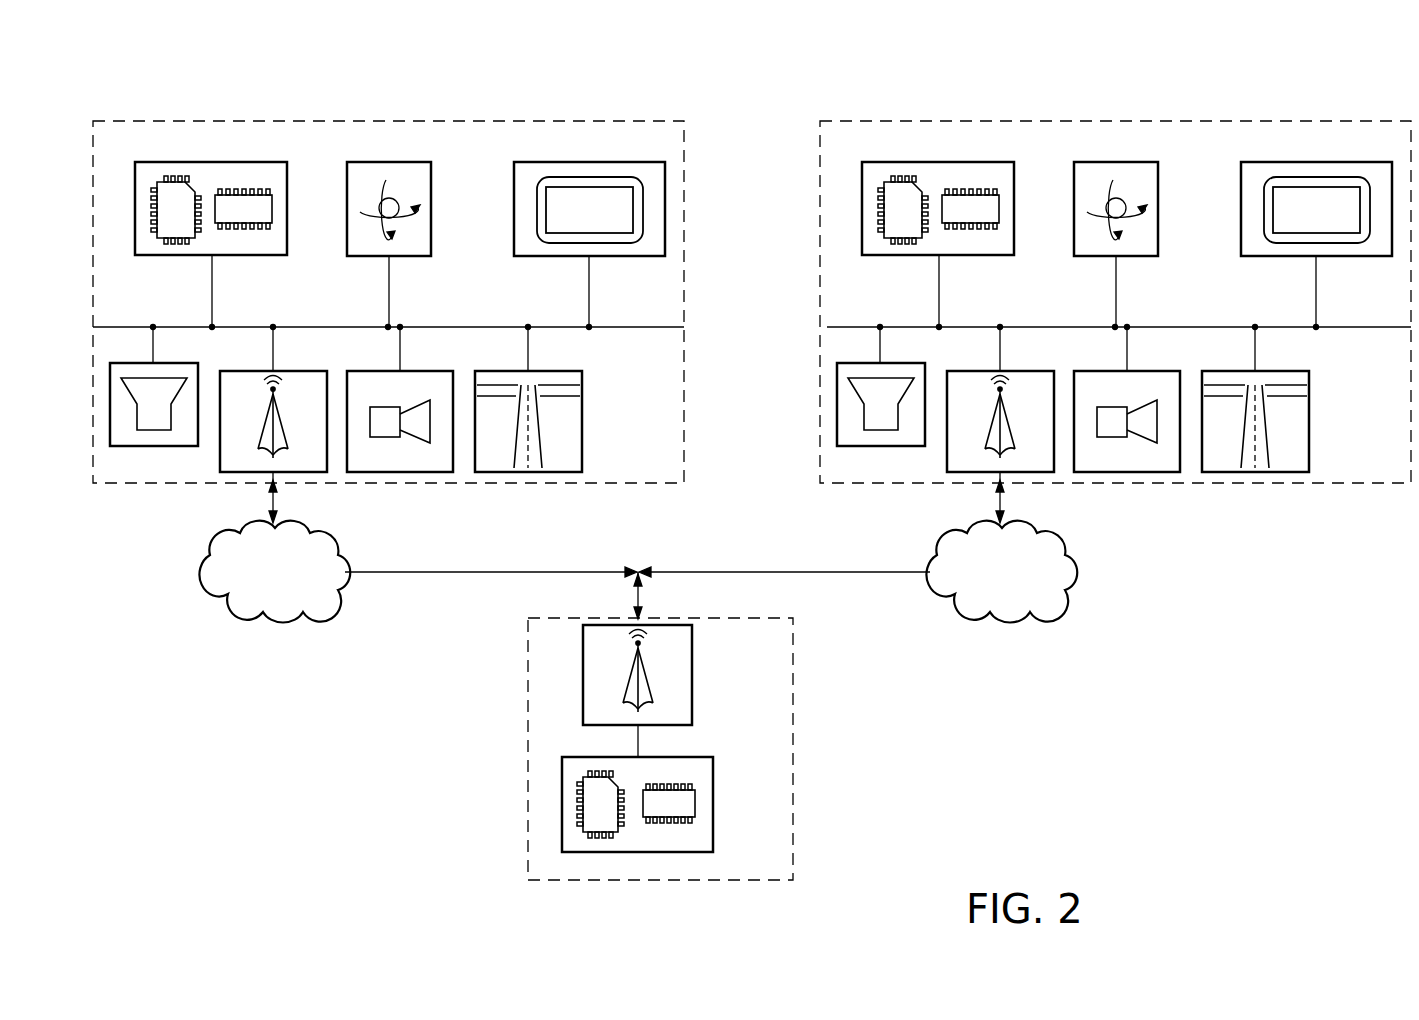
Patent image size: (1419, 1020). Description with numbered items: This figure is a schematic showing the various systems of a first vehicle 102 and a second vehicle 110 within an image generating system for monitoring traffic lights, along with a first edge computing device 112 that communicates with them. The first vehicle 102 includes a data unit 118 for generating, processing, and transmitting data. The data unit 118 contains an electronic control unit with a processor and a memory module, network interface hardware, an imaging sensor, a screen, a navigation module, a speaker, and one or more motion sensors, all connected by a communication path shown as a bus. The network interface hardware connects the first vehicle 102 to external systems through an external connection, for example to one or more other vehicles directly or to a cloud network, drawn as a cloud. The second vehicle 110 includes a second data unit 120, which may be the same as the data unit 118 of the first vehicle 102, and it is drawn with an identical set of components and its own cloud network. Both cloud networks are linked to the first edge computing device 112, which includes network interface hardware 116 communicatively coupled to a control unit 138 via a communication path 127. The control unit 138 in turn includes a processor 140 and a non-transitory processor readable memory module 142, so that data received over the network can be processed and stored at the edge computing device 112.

The first vehicle 102 is at (519, 86).
The second vehicle 110 is at (1242, 86).
The first edge computing device 112 is at (794, 675).
The network interface hardware 116 is at (692, 680).
The data unit 118 is at (403, 121).
The second data unit 120 is at (1115, 274).
The communication path 127 is at (639, 752).
The control unit 138 is at (713, 758).
The processor 140 is at (586, 775).
The non-transitory processor readable memory module 142 is at (696, 804).